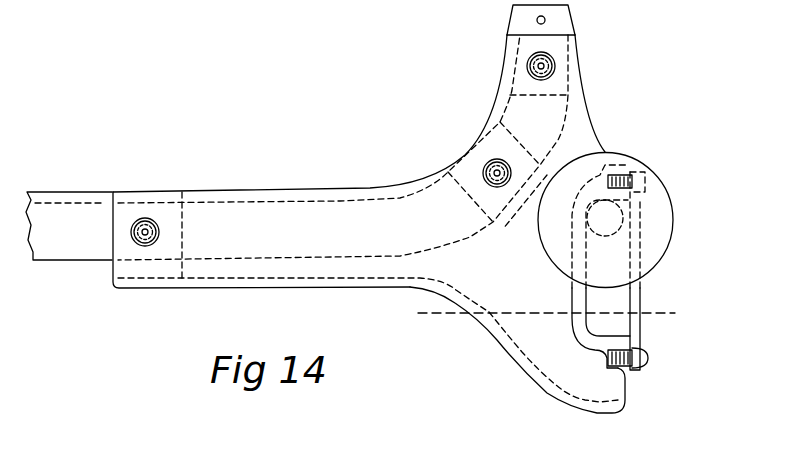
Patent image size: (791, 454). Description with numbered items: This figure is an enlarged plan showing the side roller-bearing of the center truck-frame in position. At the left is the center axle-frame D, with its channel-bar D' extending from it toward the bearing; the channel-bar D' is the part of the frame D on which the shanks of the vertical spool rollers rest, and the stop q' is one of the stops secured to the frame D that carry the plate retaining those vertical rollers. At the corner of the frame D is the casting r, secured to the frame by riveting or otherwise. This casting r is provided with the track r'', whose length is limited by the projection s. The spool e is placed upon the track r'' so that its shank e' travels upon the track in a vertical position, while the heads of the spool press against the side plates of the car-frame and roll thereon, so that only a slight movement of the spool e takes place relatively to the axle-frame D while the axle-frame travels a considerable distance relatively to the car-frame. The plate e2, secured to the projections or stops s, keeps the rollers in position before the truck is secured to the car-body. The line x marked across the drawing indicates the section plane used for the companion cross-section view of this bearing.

The center axle-frame D is at (69, 226).
The channel-bar D' is at (359, 161).
The stop q' is at (559, 24).
The casting r is at (371, 336).
The track r'' is at (578, 325).
The spool e is at (619, 221).
The shank e' is at (605, 218).
The plate e2 is at (641, 292).
The projection s is at (615, 165).
The axis line x is at (542, 313).